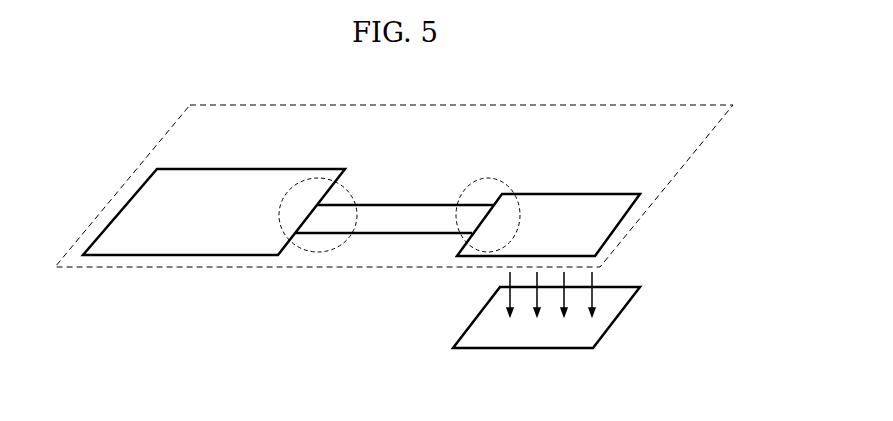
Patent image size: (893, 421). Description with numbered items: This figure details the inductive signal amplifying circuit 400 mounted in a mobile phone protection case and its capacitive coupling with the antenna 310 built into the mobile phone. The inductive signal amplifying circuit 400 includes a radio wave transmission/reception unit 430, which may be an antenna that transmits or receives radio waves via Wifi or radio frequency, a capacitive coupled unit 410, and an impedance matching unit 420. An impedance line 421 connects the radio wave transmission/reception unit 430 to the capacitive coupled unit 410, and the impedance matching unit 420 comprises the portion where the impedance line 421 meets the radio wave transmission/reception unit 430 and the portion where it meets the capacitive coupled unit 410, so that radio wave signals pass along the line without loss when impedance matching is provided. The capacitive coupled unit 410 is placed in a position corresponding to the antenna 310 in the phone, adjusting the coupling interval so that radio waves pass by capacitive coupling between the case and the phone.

The inductive signal amplifying circuit 400 is at (658, 182).
The radio wave transmission/reception unit 430 is at (223, 175).
The impedance matching unit 420 is at (469, 192).
The impedance line 421 is at (400, 203).
The capacitive coupled unit 410 is at (560, 200).
The antenna 310 is at (495, 342).